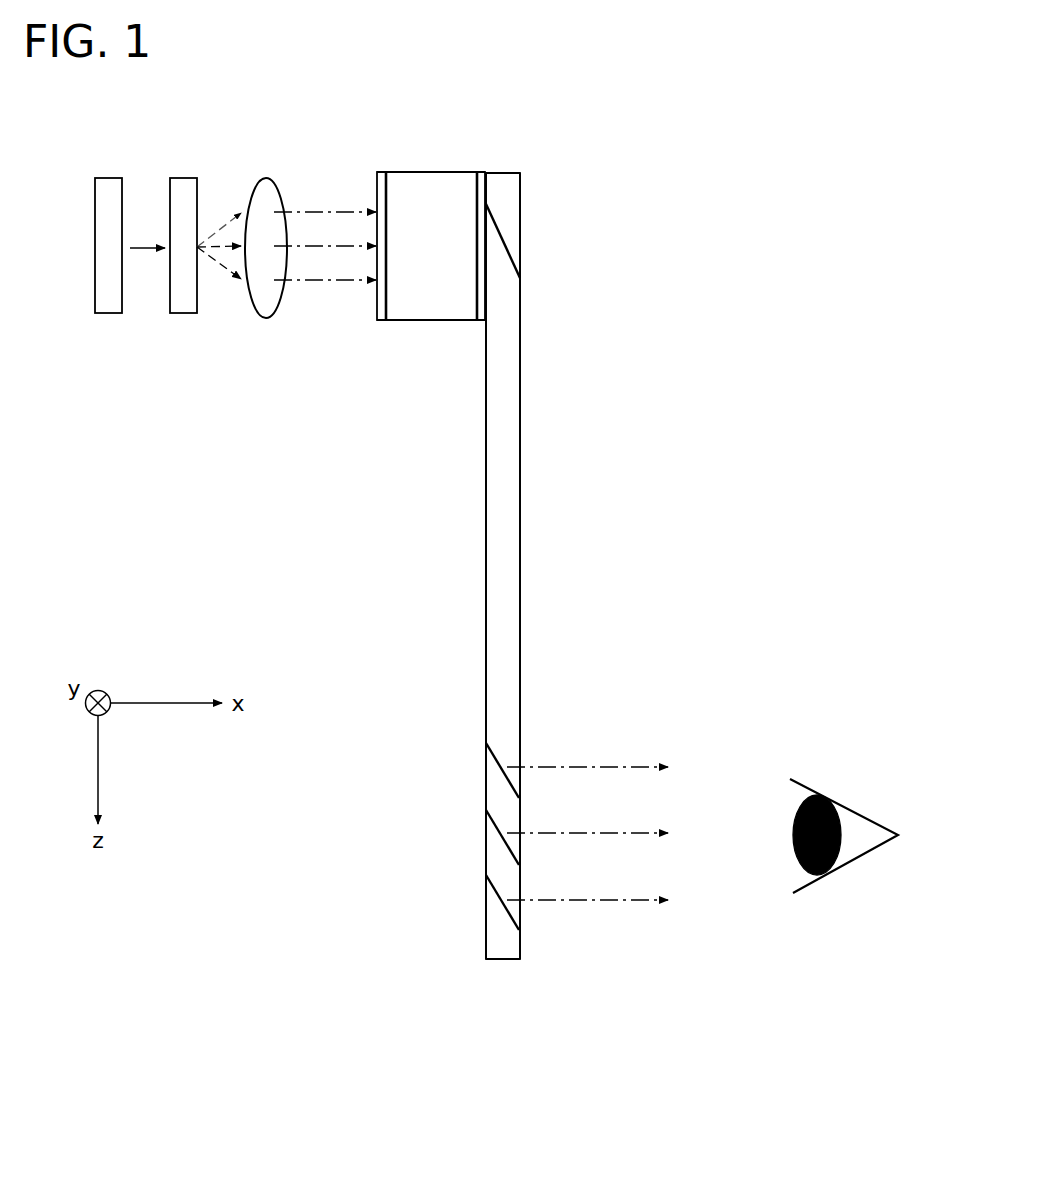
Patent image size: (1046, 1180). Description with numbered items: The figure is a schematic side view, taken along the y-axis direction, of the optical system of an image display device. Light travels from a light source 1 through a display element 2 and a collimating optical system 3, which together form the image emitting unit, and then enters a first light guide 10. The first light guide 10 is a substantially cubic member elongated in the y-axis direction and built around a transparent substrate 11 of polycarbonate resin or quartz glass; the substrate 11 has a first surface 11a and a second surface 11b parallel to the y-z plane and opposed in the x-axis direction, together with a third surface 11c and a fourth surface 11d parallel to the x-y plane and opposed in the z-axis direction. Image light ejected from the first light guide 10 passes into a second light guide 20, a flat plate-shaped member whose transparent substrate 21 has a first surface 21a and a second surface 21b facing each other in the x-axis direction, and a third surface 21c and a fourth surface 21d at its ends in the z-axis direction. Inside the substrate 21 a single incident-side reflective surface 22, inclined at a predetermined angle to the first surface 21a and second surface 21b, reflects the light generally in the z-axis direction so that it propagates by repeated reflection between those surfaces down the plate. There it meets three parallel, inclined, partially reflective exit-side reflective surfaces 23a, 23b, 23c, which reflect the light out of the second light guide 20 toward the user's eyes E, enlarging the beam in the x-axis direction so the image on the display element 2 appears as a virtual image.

The light source 1 is at (102, 317).
The display element 2 is at (175, 317).
The collimating optical system 3 is at (257, 317).
The first light guide 10 is at (374, 364).
The substrate 11 is at (433, 182).
The first surface 11a is at (383, 200).
The second surface 11b is at (478, 200).
The third surface 11c is at (403, 172).
The fourth surface 11d is at (407, 320).
The second light guide 20 is at (592, 362).
The substrate 21 is at (512, 462).
The first surface 21a is at (484, 587).
The second surface 21b is at (520, 587).
The third surface 21c is at (513, 173).
The fourth surface 21d is at (502, 960).
The incident-side reflective surface 22 is at (507, 273).
The exit-side reflective surface 23a is at (497, 743).
The exit-side reflective surface 23b is at (497, 808).
The exit-side reflective surface 23c is at (497, 873).
The eyes E is at (828, 800).